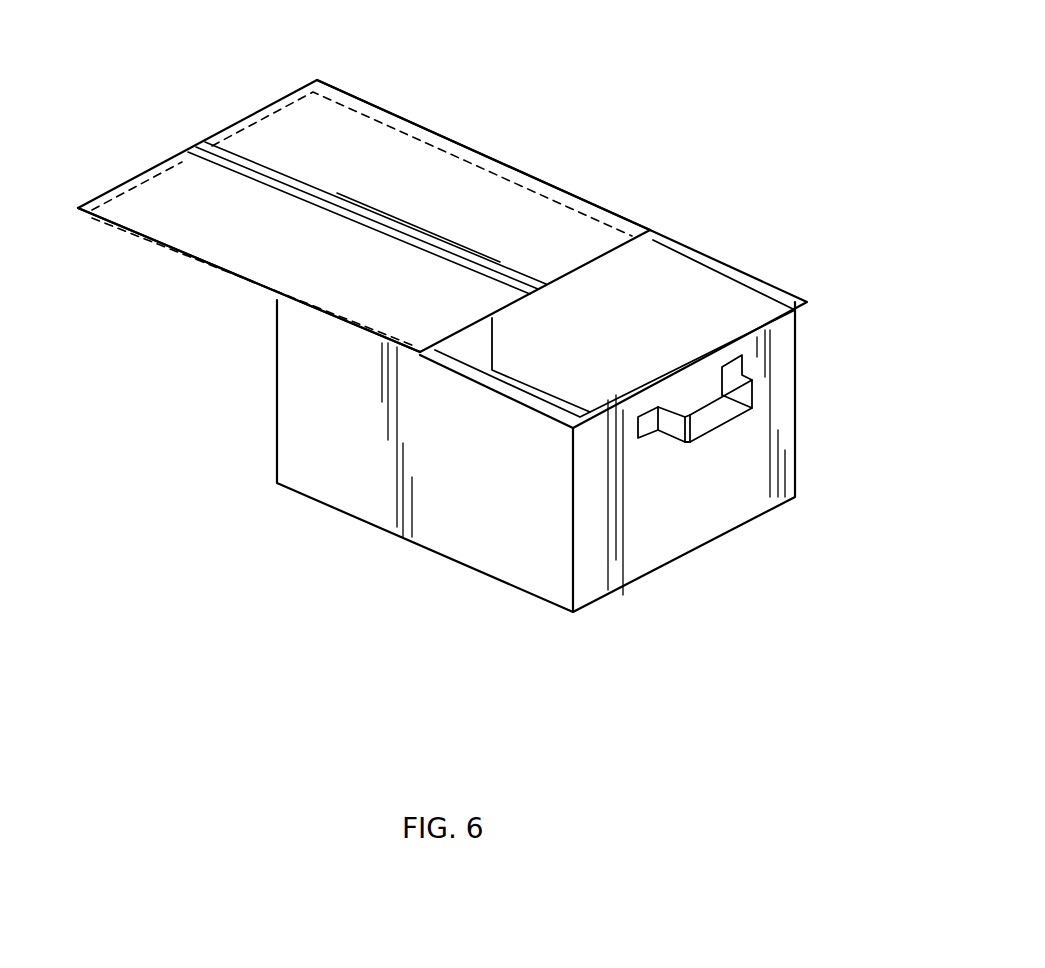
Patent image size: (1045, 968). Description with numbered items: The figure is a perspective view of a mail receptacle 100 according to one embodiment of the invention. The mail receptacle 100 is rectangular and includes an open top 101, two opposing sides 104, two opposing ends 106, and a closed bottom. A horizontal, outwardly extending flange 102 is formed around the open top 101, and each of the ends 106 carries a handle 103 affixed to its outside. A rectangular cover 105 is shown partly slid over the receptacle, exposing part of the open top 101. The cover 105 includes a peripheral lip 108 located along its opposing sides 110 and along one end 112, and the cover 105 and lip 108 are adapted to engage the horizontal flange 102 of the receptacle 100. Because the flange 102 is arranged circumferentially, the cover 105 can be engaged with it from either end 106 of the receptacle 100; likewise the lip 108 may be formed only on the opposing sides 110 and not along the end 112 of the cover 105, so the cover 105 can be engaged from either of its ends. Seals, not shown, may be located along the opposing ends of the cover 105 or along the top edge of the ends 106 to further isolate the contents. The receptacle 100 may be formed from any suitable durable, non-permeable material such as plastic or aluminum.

The mail receptacle 100 is at (323, 458).
The open top 101 is at (682, 282).
The horizontal flange 102 is at (753, 280).
The handle 103 is at (745, 405).
The opposing sides 104 is at (815, 365).
The cover 105 is at (325, 128).
The opposing ends 106 is at (267, 413).
The peripheral lip 108 is at (146, 243).
The opposing sides of cover 110 is at (417, 123).
The end of cover 112 is at (206, 142).